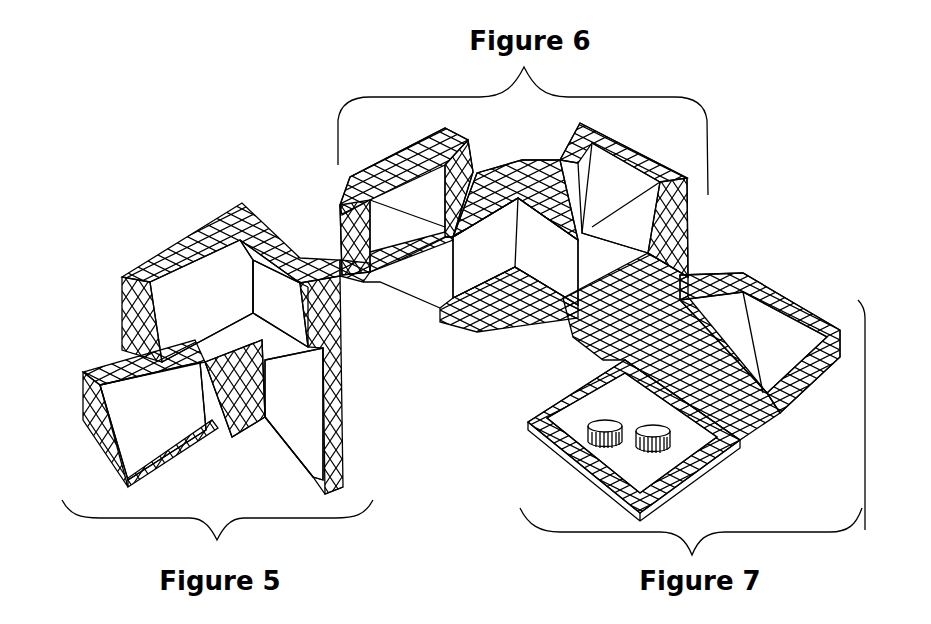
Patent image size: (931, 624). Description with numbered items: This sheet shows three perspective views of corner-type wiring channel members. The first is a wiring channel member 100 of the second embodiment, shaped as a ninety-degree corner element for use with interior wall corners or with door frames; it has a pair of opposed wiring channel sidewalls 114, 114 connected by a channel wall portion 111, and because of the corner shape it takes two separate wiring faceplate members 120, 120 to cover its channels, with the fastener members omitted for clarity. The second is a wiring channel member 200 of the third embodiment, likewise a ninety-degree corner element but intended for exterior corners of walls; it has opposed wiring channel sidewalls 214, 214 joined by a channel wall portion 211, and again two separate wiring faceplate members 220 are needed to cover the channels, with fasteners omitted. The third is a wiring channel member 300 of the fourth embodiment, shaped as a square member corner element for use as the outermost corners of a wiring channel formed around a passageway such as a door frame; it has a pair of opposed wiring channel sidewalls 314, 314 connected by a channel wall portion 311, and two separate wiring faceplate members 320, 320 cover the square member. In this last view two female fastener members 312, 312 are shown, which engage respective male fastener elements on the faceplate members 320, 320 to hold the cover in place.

In FIG. 5, the wiring channel member 100 is at (170, 262).
In FIG. 5, the channel wall portion 111 is at (170, 312).
In FIG. 5, the wiring channel sidewalls 114 is at (260, 263).
In FIG. 5, the wiring faceplate members 120 is at (123, 415).
In FIG. 6, the wiring channel member 200 is at (437, 283).
In FIG. 6, the channel wall portion 211 is at (543, 263).
In FIG. 6, the wiring channel sidewalls 214 is at (533, 205).
In FIG. 6, the wiring faceplate members 220 is at (392, 182).
In FIG. 7, the wiring channel member 300 is at (567, 448).
In FIG. 7, the channel wall portion 311 is at (647, 468).
In FIG. 7, the female fastener members 312 is at (587, 423).
In FIG. 7, the wiring channel sidewalls 314 is at (587, 397).
In FIG. 7, the wiring faceplate members 320 is at (727, 327).